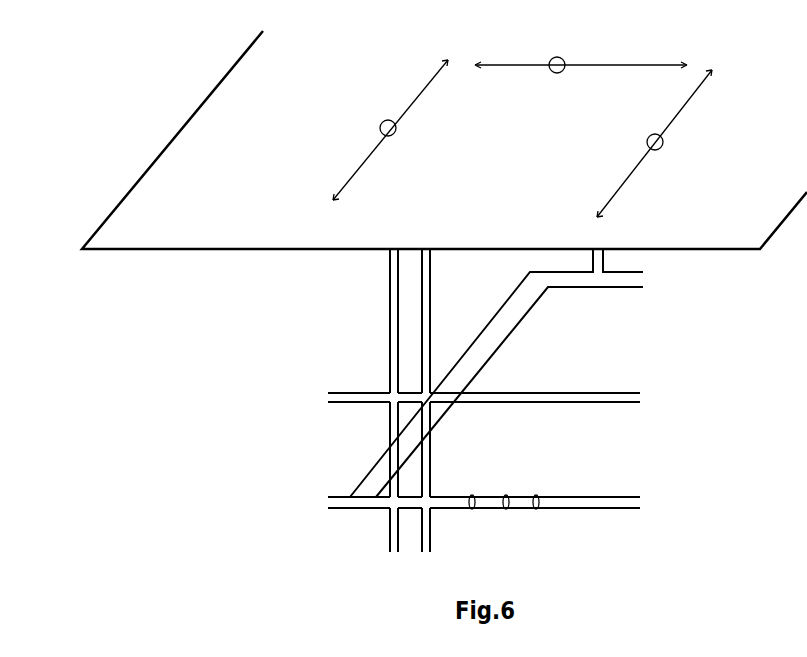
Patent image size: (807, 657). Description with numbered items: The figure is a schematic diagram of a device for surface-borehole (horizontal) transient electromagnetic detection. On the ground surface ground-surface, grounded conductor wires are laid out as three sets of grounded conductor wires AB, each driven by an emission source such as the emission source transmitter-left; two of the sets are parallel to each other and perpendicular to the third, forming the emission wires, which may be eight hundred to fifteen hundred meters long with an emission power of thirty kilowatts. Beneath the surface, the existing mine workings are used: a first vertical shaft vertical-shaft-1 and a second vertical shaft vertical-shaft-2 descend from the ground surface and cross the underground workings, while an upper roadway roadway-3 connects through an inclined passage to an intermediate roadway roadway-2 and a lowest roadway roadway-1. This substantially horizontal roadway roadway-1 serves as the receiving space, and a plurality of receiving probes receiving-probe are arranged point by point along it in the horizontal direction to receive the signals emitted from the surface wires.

The ground surface ground-surface is at (444, 140).
The transmitter transmitter-left is at (347, 120).
The vertical shaft vertical-shaft-1 is at (306, 400).
The vertical shaft vertical-shaft-2 is at (468, 400).
The roadway roadway-3 is at (557, 373).
The roadway roadway-2 is at (546, 400).
The roadway roadway-1 is at (546, 501).
The receiving probe receiving-probe is at (527, 520).